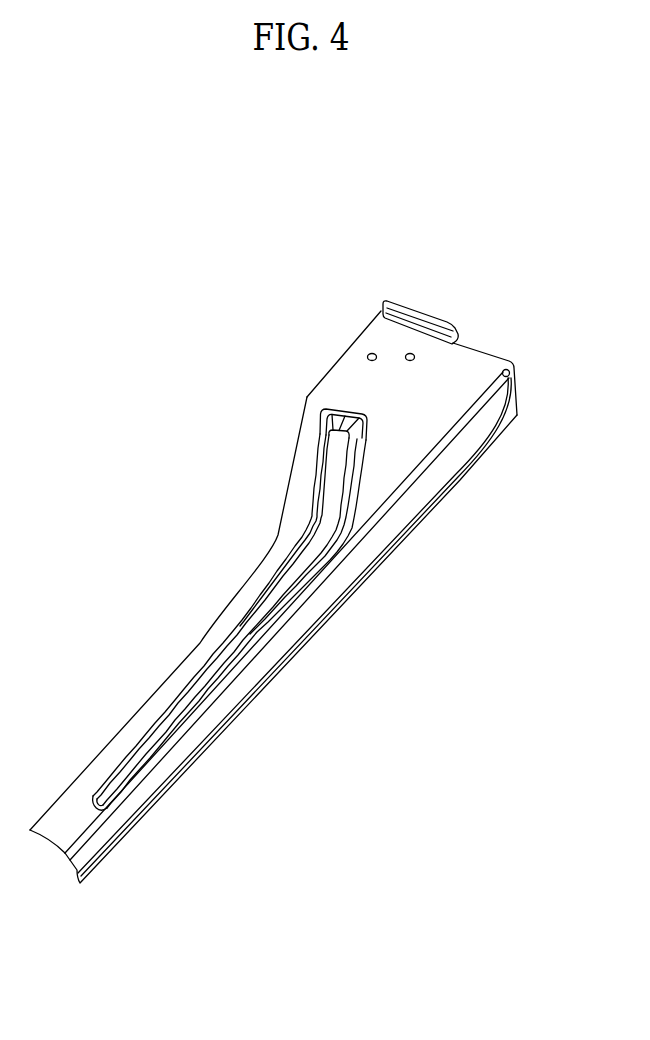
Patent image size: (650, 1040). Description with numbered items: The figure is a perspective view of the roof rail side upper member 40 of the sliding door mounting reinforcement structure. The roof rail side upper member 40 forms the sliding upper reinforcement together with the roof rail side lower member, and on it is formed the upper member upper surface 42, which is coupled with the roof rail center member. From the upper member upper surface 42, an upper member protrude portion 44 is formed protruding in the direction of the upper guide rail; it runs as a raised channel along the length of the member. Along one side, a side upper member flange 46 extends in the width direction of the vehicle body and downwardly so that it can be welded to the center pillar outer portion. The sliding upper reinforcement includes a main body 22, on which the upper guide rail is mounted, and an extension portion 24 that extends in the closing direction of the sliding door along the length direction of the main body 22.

The roof rail side upper member 40 is at (283, 548).
The upper member upper surface 42 is at (462, 362).
The upper member protrude portion 44 is at (335, 462).
The side upper member flange 46 is at (433, 497).
The main body 22 is at (225, 771).
The extension portion 24 is at (489, 479).